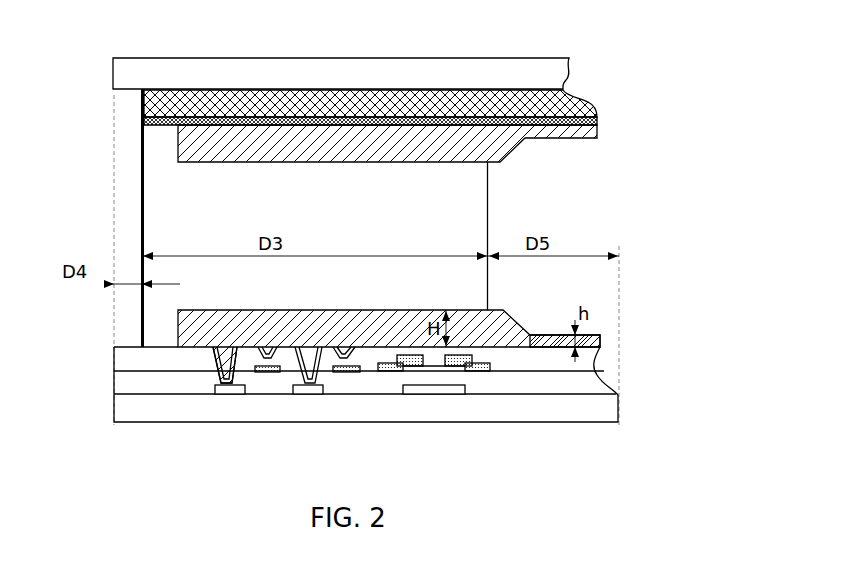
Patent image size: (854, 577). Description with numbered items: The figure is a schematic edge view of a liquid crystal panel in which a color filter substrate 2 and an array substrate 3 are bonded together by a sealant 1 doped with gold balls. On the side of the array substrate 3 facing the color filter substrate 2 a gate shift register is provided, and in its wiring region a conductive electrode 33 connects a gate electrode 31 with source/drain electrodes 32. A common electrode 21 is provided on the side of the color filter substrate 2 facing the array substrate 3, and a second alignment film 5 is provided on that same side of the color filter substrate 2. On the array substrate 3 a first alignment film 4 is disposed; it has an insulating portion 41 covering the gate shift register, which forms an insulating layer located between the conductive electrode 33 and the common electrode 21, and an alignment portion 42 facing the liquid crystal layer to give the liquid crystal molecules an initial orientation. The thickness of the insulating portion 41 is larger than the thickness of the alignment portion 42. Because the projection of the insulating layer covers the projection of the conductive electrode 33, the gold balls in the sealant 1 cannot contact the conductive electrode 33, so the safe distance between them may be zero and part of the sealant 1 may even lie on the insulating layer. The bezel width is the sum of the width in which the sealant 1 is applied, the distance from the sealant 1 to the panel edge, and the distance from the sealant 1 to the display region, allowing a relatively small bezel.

The sealant 1 is at (150, 203).
The color filter substrate 2 is at (138, 106).
The common electrode 21 is at (597, 120).
The second alignment film 5 is at (515, 147).
The first alignment film 4 is at (329, 325).
The insulating portion 41 is at (178, 326).
The alignment portion 42 is at (542, 337).
The array substrate 3 is at (337, 409).
The gate electrode 31 is at (214, 388).
The source/drain electrodes 32 is at (338, 373).
The conductive electrode 33 is at (297, 368).